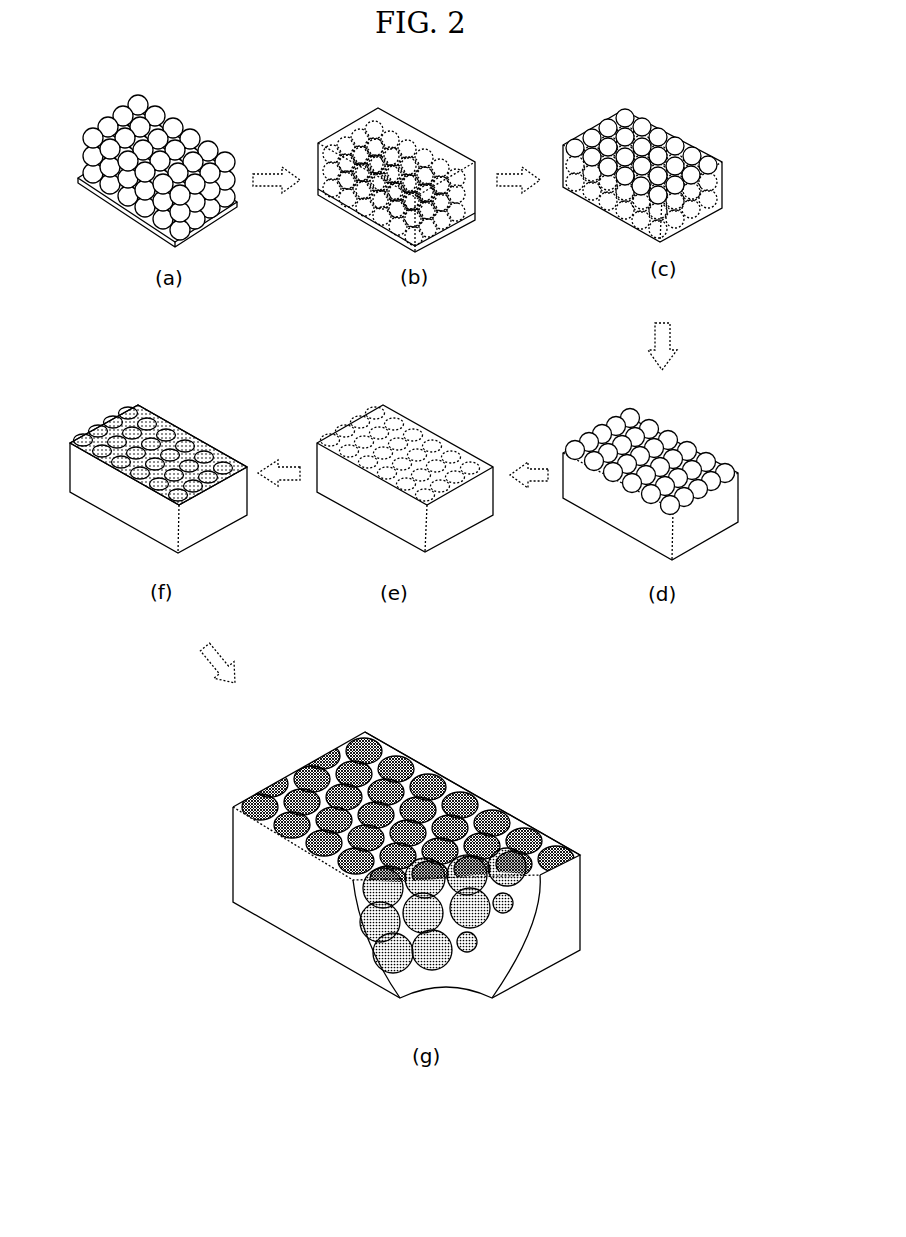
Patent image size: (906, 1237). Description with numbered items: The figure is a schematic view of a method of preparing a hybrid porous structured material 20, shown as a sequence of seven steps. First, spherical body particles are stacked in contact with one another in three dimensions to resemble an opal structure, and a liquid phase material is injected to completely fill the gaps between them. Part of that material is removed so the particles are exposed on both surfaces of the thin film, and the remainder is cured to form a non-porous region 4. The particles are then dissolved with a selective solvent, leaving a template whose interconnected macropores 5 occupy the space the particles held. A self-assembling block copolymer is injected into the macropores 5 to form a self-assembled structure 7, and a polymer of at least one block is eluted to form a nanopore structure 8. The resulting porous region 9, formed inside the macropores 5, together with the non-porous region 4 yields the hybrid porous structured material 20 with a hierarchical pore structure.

The non-porous region 4 is at (650, 489).
The macropores 5 is at (420, 427).
The self-assembled structure 7 is at (218, 446).
The nanopore structure 8 is at (468, 788).
The porous region 9 is at (397, 745).
The hybrid porous structured material 20 is at (413, 852).